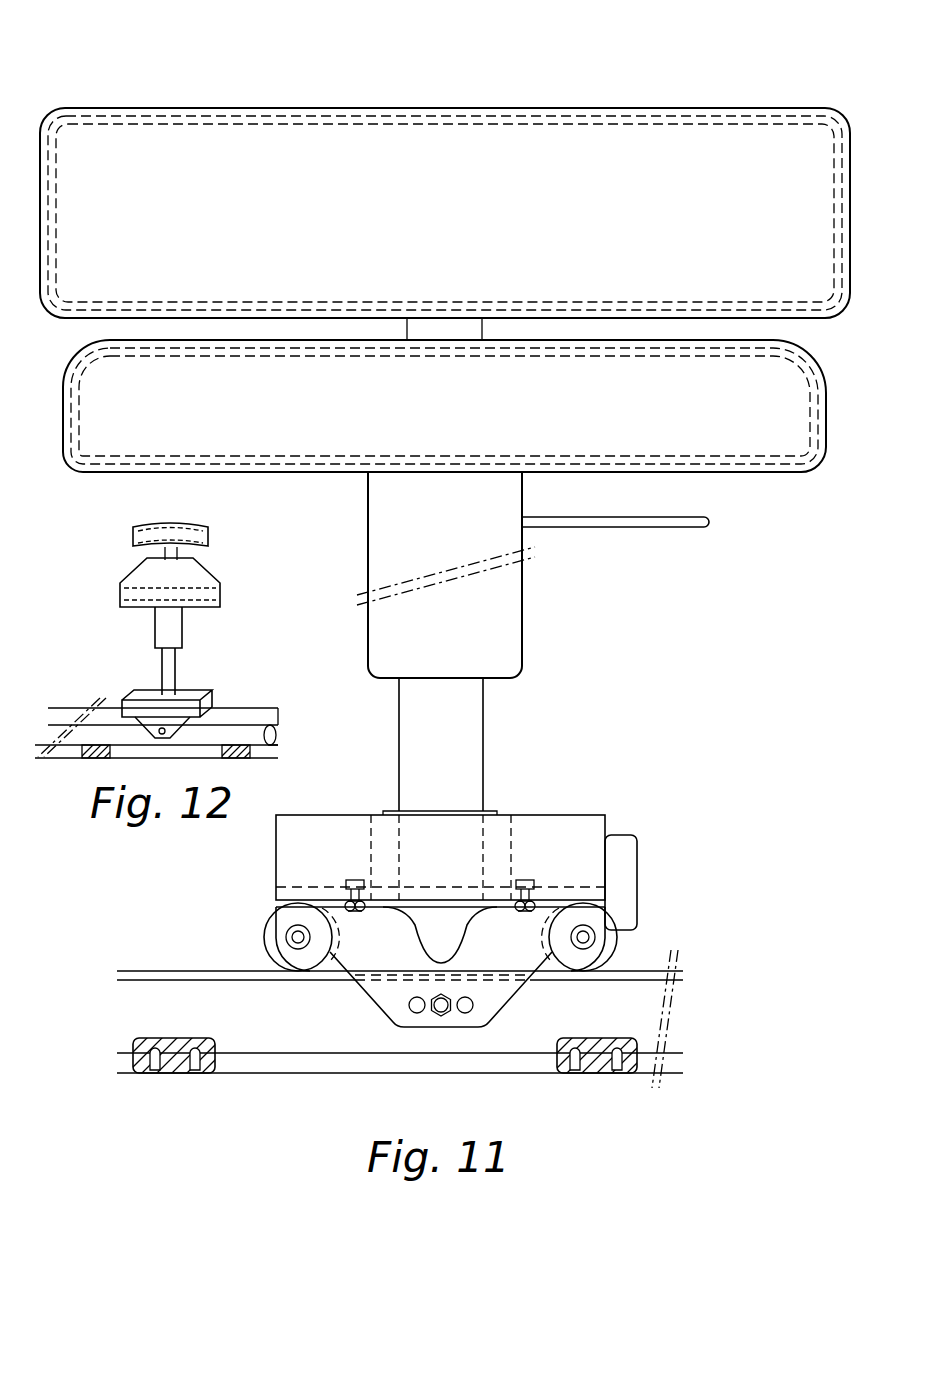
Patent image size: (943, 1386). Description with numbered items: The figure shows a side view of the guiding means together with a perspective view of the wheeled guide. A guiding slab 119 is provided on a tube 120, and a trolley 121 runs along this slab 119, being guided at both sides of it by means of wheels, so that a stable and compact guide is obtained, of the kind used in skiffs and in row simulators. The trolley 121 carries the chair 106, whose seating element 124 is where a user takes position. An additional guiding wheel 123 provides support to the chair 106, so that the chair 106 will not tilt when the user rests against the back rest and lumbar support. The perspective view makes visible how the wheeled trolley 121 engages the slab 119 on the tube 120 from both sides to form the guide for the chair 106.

In FIG. 11, the chair 106 is at (640, 590).
In FIG. 12, the chair 106 is at (240, 567).
In FIG. 11, the guiding slab 119 is at (638, 970).
In FIG. 12, the guiding slab 119 is at (247, 720).
In FIG. 11, the tube 120 is at (273, 1027).
In FIG. 11, the trolley 121 is at (656, 800).
In FIG. 12, the trolley 121 is at (230, 672).
In FIG. 11, the additional guiding wheel 123 is at (745, 155).
In FIG. 11, the seating element 124 is at (778, 430).